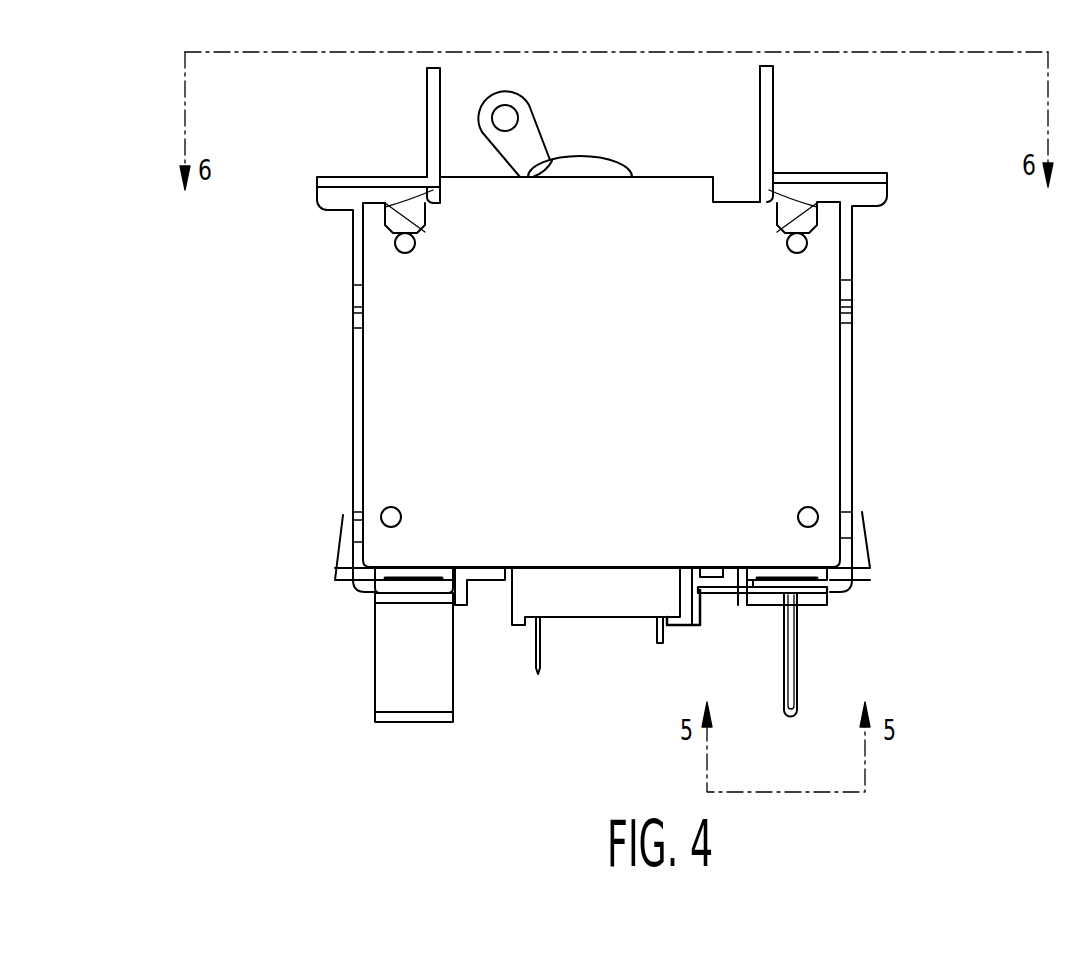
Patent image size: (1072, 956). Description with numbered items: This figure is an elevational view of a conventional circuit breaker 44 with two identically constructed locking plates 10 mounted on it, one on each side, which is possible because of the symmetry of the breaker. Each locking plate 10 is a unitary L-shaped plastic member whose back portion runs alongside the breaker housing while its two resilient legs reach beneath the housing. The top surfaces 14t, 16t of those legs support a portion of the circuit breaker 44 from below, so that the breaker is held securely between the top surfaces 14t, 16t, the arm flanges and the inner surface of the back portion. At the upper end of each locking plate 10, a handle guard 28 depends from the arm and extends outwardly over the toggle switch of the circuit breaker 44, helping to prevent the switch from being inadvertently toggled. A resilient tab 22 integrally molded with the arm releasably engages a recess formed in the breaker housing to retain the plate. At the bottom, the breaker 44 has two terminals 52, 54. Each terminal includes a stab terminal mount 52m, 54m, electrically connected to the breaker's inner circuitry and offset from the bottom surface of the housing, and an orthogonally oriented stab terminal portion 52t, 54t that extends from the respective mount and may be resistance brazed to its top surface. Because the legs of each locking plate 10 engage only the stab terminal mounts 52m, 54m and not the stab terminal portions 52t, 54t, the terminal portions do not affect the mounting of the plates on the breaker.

The locking plate 10 is at (346, 356).
The handle guard 28 is at (430, 146).
The resilient tab 22 is at (397, 208).
The circuit breaker 44 is at (632, 392).
The top surface of first leg 14t is at (474, 567).
The top surface of second leg 16t is at (720, 567).
The terminal 52 is at (334, 676).
The stab terminal mount 52m is at (380, 586).
The stab terminal portion 52t is at (410, 665).
The terminal 54 is at (842, 627).
The stab terminal mount 54m is at (822, 584).
The stab terminal portion 54t is at (797, 662).